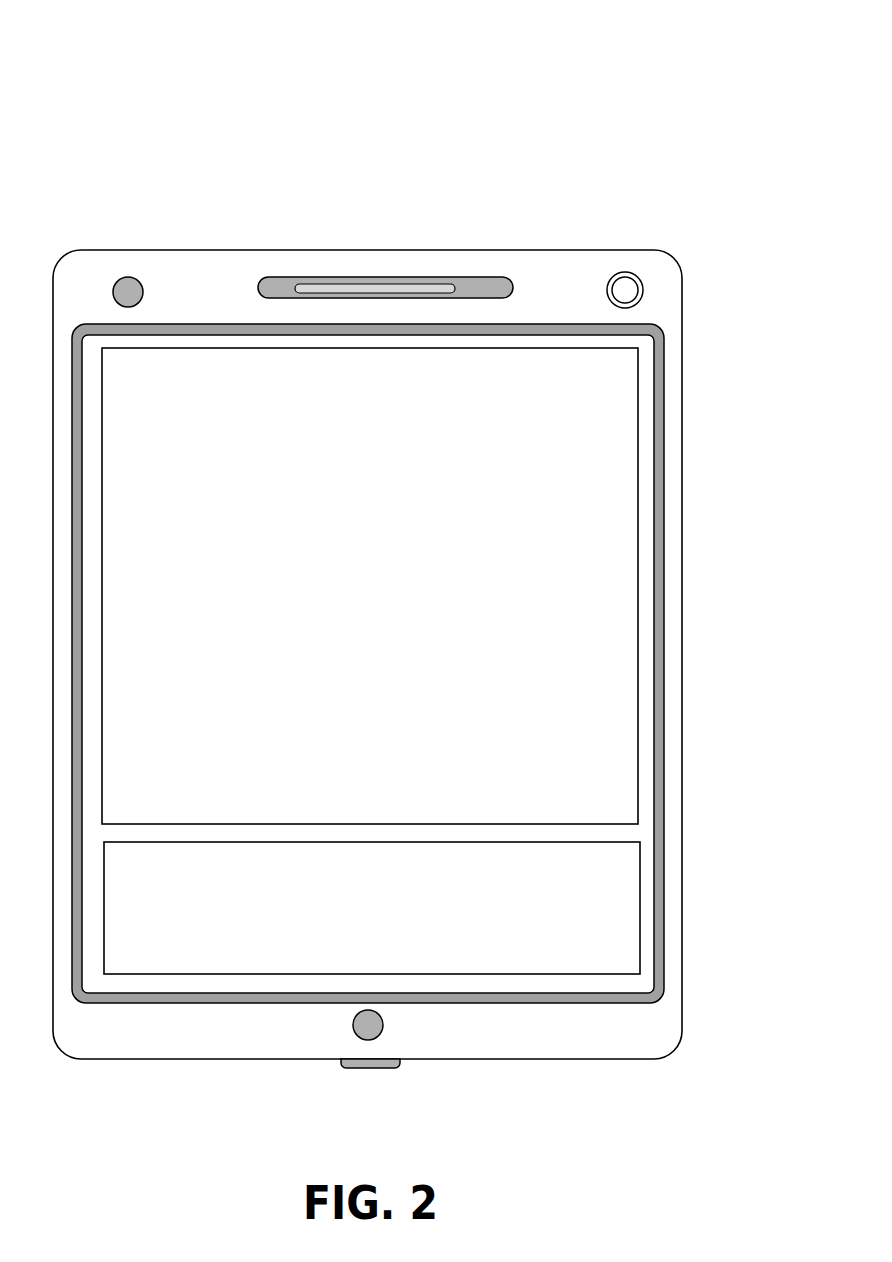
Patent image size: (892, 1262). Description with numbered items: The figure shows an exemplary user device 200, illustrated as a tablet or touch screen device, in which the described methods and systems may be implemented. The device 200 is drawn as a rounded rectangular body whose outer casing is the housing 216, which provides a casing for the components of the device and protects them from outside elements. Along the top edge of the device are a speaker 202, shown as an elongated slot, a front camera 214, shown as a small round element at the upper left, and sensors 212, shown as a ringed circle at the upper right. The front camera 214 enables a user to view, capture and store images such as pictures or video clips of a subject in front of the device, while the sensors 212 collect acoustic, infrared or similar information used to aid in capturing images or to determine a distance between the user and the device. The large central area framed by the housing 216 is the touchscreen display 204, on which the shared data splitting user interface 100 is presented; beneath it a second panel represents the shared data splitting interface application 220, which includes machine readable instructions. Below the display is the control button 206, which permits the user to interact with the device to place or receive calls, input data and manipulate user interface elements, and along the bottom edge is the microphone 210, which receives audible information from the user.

The user device 200 is at (367, 533).
The speaker 202 is at (377, 277).
The touchscreen display 204 is at (485, 326).
The control button 206 is at (383, 1025).
The microphone 210 is at (378, 1068).
The sensors 212 is at (644, 290).
The front camera 214 is at (128, 277).
The housing 216 is at (664, 457).
The shared data splitting user interface 100 is at (388, 627).
The shared data splitting interface application 220 is at (393, 936).